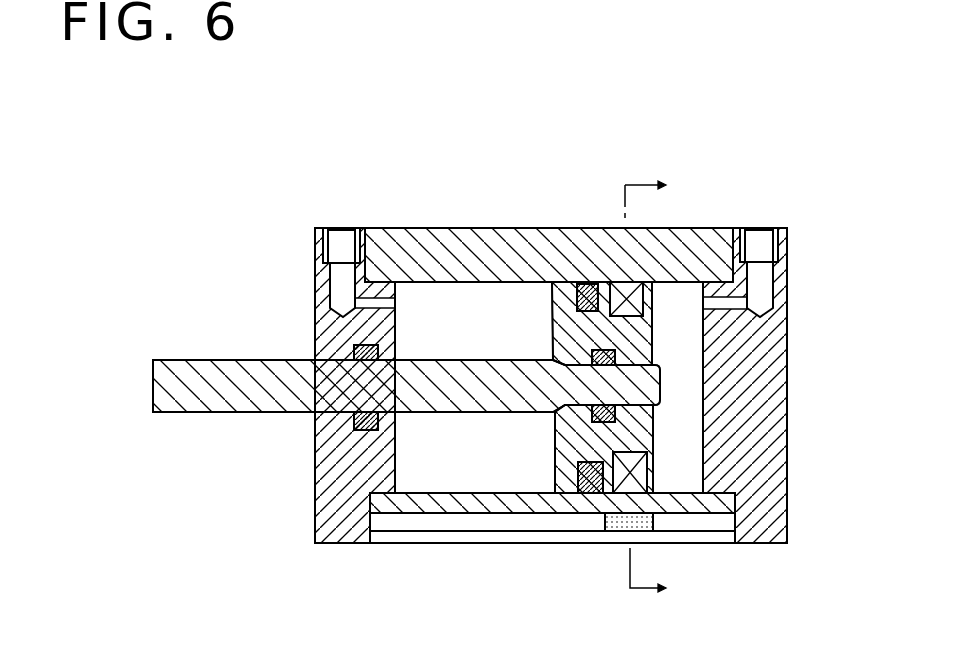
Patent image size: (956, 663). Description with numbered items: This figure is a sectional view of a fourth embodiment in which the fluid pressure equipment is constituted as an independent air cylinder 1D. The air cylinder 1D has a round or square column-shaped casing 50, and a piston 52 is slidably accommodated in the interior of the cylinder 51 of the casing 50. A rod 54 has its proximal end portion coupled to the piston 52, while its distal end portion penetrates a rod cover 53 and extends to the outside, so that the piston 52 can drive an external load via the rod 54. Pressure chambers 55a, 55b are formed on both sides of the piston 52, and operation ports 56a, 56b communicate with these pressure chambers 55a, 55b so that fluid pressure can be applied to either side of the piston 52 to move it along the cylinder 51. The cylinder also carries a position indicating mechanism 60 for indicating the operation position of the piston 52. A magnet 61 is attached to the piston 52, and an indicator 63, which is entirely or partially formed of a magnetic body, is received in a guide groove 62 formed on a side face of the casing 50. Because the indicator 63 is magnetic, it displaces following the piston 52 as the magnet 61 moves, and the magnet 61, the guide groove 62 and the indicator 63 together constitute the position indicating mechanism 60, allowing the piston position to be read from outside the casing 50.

The air cylinder 1D is at (512, 375).
The casing 50 is at (475, 246).
The cylinder 51 is at (450, 283).
The piston 52 is at (560, 325).
The rod cover 53 is at (343, 480).
The rod 54 is at (233, 383).
The pressure chamber 55a is at (683, 377).
The pressure chamber 55b is at (443, 455).
The operation port 56a is at (759, 250).
The operation port 56b is at (340, 255).
The position indicating mechanism 60 is at (556, 553).
The magnet 61 is at (638, 473).
The guide groove 62 is at (490, 520).
The indicator 63 is at (618, 528).